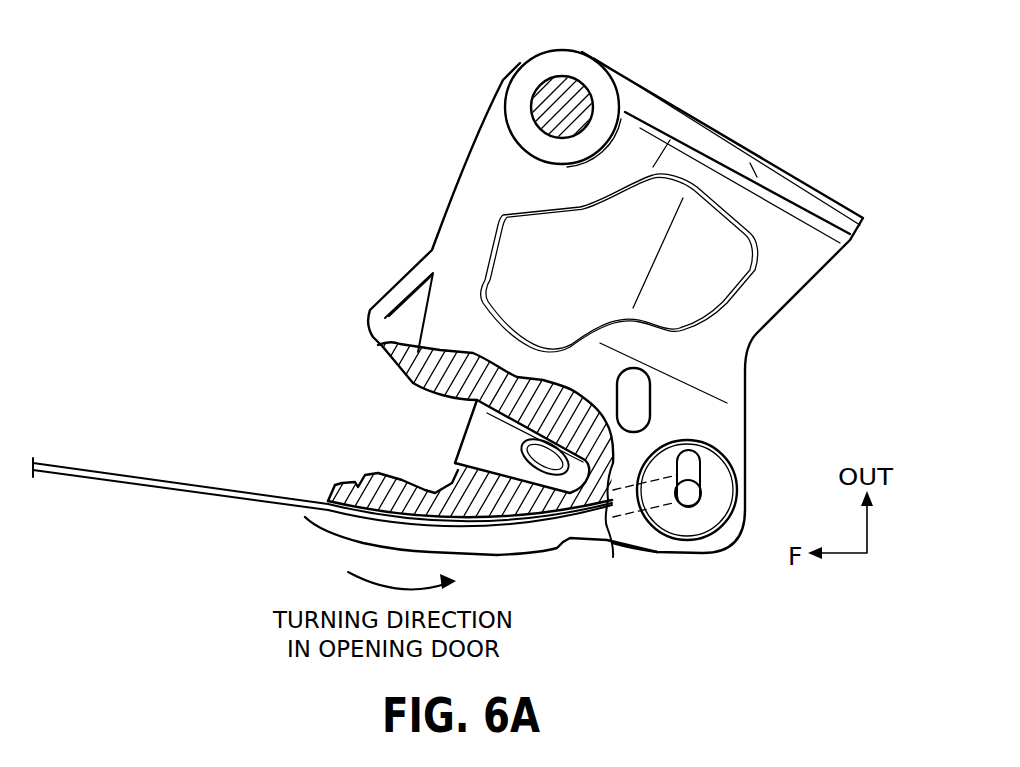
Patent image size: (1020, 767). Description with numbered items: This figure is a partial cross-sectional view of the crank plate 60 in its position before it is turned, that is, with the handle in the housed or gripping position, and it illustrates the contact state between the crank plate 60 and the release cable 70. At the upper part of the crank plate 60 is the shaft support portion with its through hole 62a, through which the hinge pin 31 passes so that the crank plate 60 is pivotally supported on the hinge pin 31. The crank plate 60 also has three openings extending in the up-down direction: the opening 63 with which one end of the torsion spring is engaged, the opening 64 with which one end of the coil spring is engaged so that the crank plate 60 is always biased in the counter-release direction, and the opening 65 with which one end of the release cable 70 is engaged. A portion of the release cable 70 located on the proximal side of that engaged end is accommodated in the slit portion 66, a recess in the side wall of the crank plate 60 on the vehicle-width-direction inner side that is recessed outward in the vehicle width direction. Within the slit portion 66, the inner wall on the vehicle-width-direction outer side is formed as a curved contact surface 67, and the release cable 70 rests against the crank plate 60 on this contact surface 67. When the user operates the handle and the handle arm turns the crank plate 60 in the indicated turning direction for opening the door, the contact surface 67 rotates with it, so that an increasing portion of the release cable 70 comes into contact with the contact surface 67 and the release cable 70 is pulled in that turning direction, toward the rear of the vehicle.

The hinge pin 31 is at (587, 105).
The crank plate 60 is at (715, 128).
The through hole 62a is at (540, 97).
The opening 63 is at (645, 397).
The opening 64 is at (490, 430).
The opening 65 is at (717, 488).
The slit portion 66 is at (348, 526).
The contact surface 67 is at (468, 520).
The release cable 70 is at (203, 490).